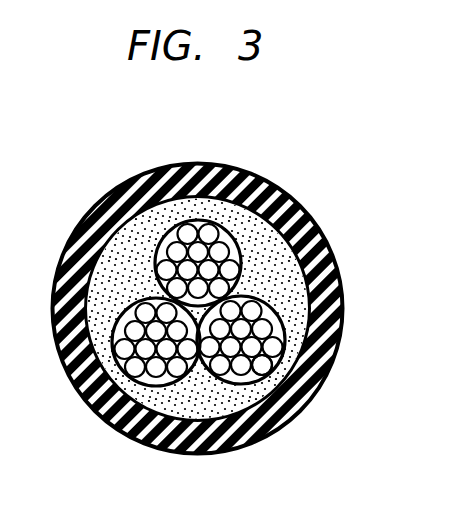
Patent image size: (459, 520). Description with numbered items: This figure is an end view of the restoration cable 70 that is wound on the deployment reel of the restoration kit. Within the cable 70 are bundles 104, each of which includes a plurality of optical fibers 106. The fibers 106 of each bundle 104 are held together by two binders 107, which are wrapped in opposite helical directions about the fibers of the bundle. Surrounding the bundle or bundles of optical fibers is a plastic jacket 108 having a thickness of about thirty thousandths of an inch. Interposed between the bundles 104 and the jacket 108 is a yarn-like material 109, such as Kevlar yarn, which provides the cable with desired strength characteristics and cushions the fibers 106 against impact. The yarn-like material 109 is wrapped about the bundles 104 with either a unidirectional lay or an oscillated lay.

The restoration cable 70 is at (198, 152).
The bundle 104 is at (290, 303).
The optical fiber 106 is at (268, 363).
The binder 107 is at (283, 324).
The plastic jacket 108 is at (229, 449).
The yarn-like material 109 is at (138, 393).